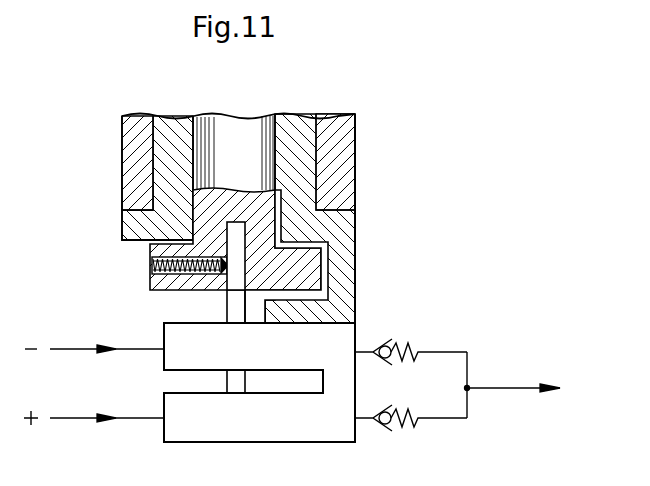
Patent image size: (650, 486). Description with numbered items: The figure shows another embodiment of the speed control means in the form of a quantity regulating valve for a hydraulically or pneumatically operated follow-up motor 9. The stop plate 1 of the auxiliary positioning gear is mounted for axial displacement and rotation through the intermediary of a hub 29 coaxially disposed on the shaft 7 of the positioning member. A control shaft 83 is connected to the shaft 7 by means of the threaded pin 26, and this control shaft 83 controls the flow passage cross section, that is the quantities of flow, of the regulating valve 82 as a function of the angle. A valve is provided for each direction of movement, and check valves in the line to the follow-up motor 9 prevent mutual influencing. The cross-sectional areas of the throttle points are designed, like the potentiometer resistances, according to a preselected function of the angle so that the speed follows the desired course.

The stop plate 1 is at (347, 157).
The shaft 7 is at (152, 284).
The threaded pin 26 is at (151, 258).
The hub 29 is at (345, 291).
The control shaft 83 is at (227, 304).
The volume regulating valve 82 is at (323, 428).
The follow-up motor 9 is at (467, 385).